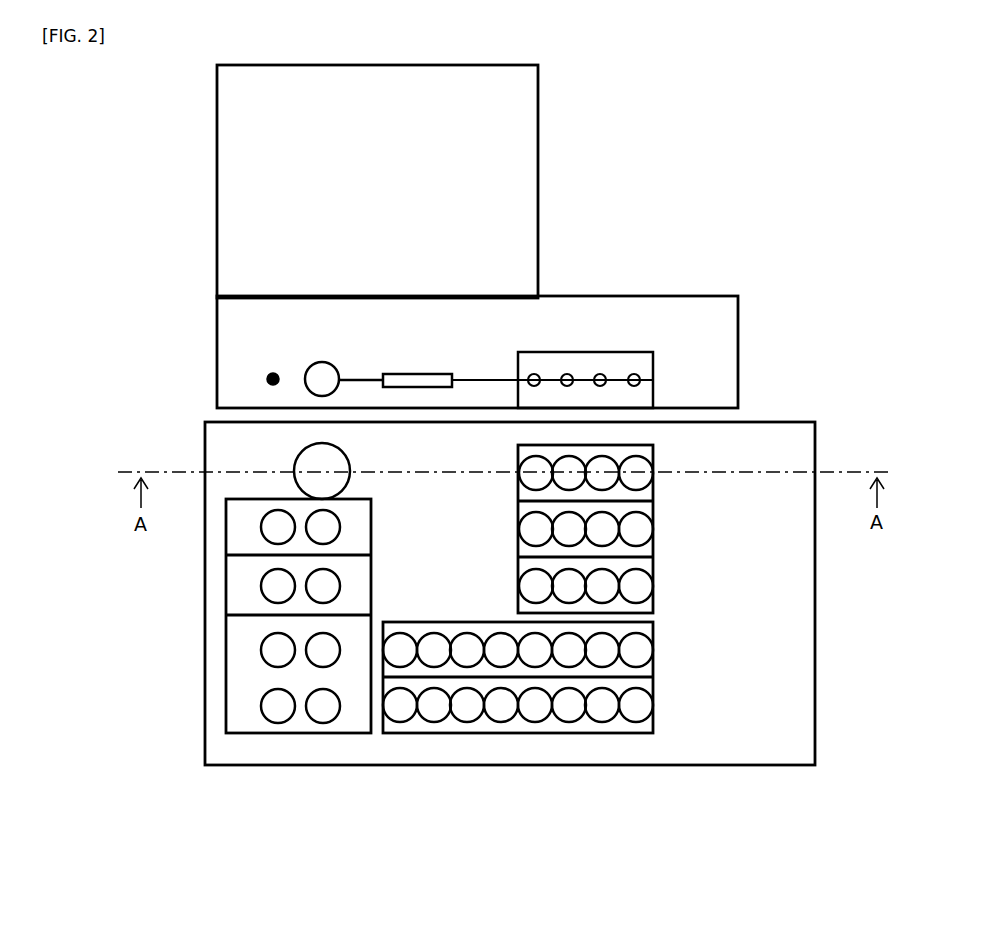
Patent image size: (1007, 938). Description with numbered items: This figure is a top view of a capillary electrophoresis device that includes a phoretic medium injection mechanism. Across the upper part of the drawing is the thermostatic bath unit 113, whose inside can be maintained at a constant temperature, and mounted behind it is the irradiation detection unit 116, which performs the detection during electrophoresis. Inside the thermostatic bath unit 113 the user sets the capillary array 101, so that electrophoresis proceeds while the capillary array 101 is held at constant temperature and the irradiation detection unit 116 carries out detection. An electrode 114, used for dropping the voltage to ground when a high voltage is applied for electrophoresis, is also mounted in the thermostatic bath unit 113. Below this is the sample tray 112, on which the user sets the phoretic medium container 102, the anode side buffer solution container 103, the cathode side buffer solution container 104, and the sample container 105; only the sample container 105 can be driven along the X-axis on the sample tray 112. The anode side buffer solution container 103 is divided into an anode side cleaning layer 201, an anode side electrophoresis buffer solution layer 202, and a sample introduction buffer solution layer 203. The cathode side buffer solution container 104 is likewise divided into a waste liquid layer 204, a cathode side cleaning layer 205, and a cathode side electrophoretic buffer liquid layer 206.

The capillary array 101 is at (488, 370).
The phoretic medium container 102 is at (300, 463).
The anode side buffer solution container 103 is at (282, 733).
The cathode side buffer solution container 104 is at (657, 443).
The sample container 105 is at (653, 653).
The sample tray 112 is at (462, 752).
The thermostatic bath unit 113 is at (717, 323).
The electrode 114 is at (272, 374).
The irradiation detection unit 116 is at (517, 133).
The anode side cleaning layer 201 is at (245, 520).
The anode side electrophoresis buffer solution layer 202 is at (245, 590).
The sample introduction buffer solution layer 203 is at (258, 665).
The waste liquid layer 204 is at (655, 472).
The cathode side cleaning layer 205 is at (653, 543).
The cathode side electrophoretic buffer liquid layer 206 is at (653, 597).